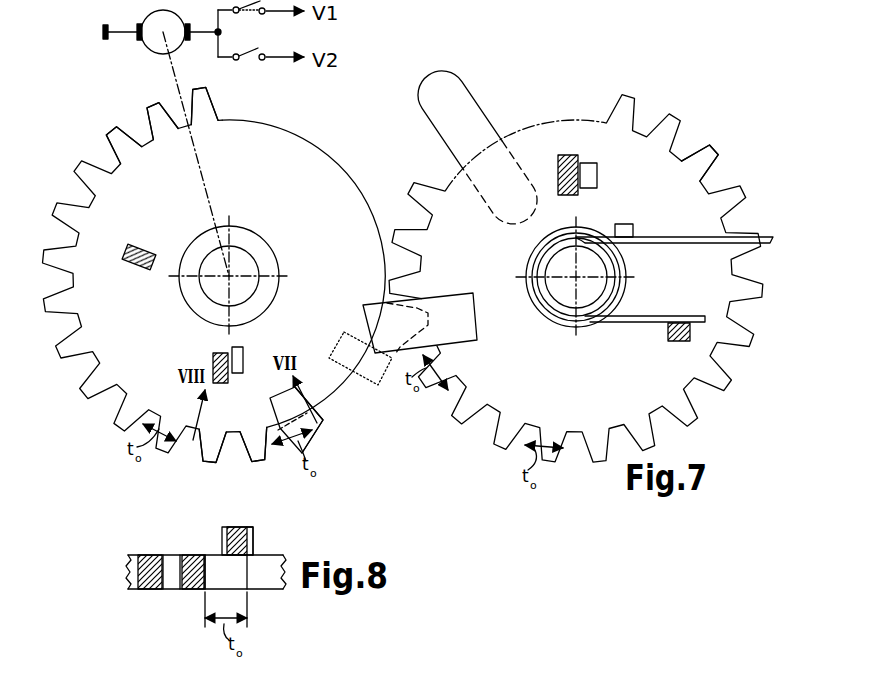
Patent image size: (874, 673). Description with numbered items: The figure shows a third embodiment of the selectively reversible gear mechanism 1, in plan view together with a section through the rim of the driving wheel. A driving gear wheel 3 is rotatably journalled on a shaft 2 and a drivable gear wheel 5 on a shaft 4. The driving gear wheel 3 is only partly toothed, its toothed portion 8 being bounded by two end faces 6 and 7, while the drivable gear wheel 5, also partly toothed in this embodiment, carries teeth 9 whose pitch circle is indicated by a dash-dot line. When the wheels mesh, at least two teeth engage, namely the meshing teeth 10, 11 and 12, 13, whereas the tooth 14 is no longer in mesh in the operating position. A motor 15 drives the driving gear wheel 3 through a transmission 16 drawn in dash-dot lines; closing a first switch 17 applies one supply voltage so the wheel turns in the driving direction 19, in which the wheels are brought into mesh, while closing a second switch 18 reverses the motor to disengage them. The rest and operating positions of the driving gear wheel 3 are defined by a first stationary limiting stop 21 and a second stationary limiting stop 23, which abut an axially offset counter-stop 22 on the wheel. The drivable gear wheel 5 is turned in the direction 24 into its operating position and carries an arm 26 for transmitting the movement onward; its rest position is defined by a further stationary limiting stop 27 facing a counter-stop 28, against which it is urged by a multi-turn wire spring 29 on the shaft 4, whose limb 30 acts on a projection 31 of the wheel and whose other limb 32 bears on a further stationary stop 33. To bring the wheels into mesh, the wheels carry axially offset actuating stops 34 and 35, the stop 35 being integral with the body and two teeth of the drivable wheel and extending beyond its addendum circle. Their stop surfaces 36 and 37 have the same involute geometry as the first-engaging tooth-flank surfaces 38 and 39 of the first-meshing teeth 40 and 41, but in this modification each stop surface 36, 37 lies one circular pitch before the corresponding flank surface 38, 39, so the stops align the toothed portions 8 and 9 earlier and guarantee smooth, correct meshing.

In FIG. 7, the gear mechanism 1 is at (368, 100).
In FIG. 7, the shaft 2 is at (246, 263).
In FIG. 7, the driving gear wheel 3 is at (214, 272).
In FIG. 8, the driving gear wheel 3 is at (195, 563).
In FIG. 7, the shaft 4 is at (557, 290).
In FIG. 7, the drivable gear wheel 5 is at (531, 134).
In FIG. 7, the end face 6 is at (262, 424).
In FIG. 8, the end face 6 is at (218, 572).
In FIG. 7, the end face 7 is at (228, 112).
In FIG. 7, the toothed portion 8 is at (55, 368).
In FIG. 8, the toothed portion 8 is at (145, 553).
In FIG. 7, the teeth 9 is at (483, 432).
In FIG. 7, the meshing tooth 10 is at (166, 102).
In FIG. 7, the meshing tooth 11 is at (209, 84).
In FIG. 7, the meshing tooth 12 is at (581, 284).
In FIG. 7, the meshing tooth 13 is at (707, 156).
In FIG. 7, the tooth 14 is at (119, 125).
In FIG. 7, the motor 15 is at (160, 24).
In FIG. 7, the transmission 16 is at (216, 167).
In FIG. 7, the first switch 17 is at (256, 8).
In FIG. 7, the second switch 18 is at (256, 44).
In FIG. 7, the driving direction 19 is at (135, 373).
In FIG. 8, the driving direction 19 is at (192, 533).
In FIG. 7, the first stationary limiting stop 21 is at (215, 356).
In FIG. 7, the counter-stop 22 is at (241, 360).
In FIG. 7, the second stationary limiting stop 23 is at (140, 247).
In FIG. 7, the direction of rotation 24 is at (540, 414).
In FIG. 7, the arm 26 is at (446, 88).
In FIG. 7, the further stationary limiting stop 27 is at (572, 155).
In FIG. 7, the counter-stop 28 is at (598, 176).
In FIG. 7, the spring 29 is at (640, 262).
In FIG. 7, the limb 30 is at (686, 239).
In FIG. 7, the projection 31 is at (622, 224).
In FIG. 7, the limb 32 is at (641, 317).
In FIG. 7, the further stationary stop 33 is at (672, 342).
In FIG. 7, the actuating stop 34 is at (284, 403).
In FIG. 8, the actuating stop 34 is at (236, 527).
In FIG. 7, the actuating stop 35 is at (455, 297).
In FIG. 7, the stop surface 36 is at (303, 428).
In FIG. 8, the stop surface 36 is at (253, 542).
In FIG. 7, the stop surface 37 is at (360, 369).
In FIG. 7, the tooth-flank surface 38 is at (266, 446).
In FIG. 8, the tooth-flank surface 38 is at (206, 556).
In FIG. 7, the tooth-flank surface 39 is at (445, 400).
In FIG. 7, the first-meshing tooth 40 is at (257, 454).
In FIG. 8, the first-meshing tooth 40 is at (196, 590).
In FIG. 7, the first-meshing tooth 41 is at (452, 388).